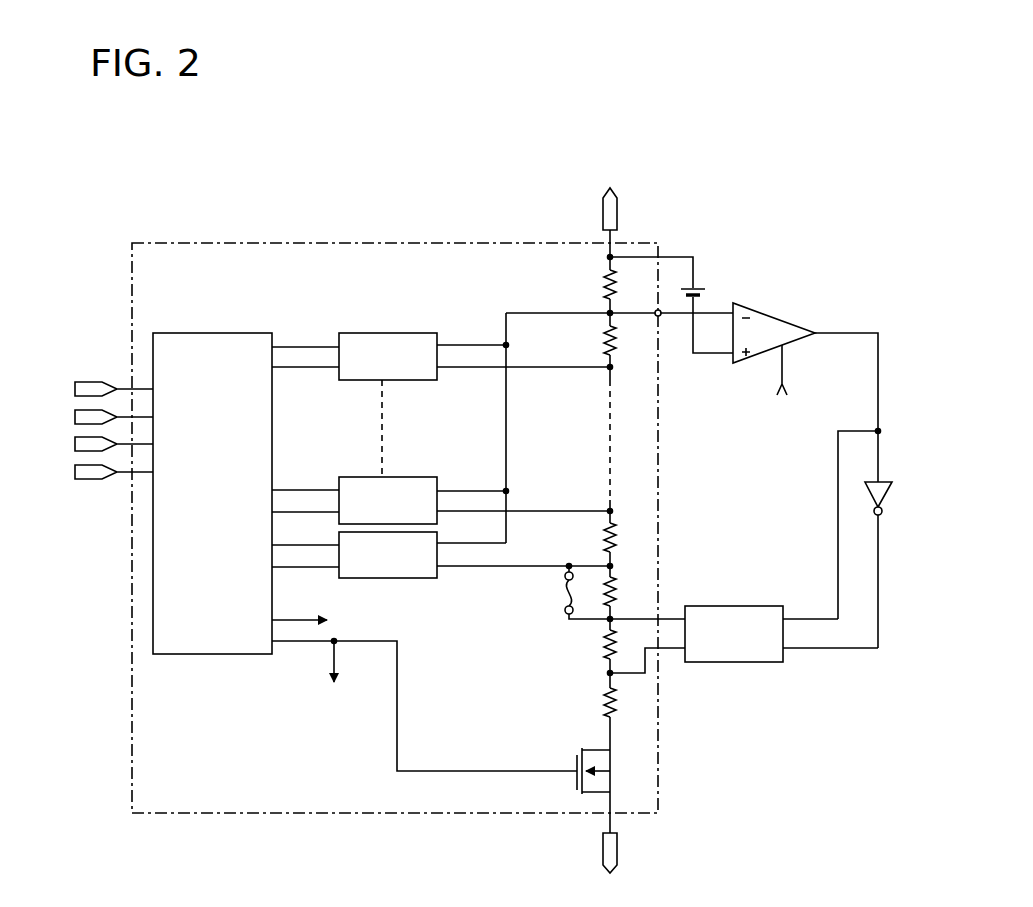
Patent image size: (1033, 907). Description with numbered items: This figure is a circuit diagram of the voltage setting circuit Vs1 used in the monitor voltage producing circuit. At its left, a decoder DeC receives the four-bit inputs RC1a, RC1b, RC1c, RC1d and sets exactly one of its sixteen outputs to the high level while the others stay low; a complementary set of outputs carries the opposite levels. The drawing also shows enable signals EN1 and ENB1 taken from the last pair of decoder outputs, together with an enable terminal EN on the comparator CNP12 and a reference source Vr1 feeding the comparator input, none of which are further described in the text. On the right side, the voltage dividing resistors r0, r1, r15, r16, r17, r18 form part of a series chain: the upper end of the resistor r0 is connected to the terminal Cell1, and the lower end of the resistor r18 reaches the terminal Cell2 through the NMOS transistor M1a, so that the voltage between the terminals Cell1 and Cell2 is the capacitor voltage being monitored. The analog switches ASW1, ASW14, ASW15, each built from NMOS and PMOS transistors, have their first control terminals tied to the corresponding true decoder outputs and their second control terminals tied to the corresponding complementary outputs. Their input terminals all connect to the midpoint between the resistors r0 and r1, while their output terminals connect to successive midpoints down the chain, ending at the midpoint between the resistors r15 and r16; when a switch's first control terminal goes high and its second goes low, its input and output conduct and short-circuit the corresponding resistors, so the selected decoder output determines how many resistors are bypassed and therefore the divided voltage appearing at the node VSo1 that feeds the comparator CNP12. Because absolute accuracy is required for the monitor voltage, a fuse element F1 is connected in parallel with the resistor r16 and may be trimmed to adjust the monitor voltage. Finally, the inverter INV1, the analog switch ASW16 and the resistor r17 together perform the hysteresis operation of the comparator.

The voltage setting circuit Vs1 is at (352, 265).
The decoder DeC is at (193, 327).
The input RC1a is at (93, 389).
The input RC1b is at (93, 417).
The input RC1c is at (93, 444).
The input RC1d is at (93, 472).
The enable signal EN1 is at (315, 621).
The inverted enable signal ENB1 is at (337, 674).
The analog switch ASW1 is at (397, 332).
The analog switch ASW14 is at (406, 477).
The analog switch ASW15 is at (417, 579).
The analog switch ASW16 is at (758, 606).
The terminal Cell1 is at (610, 199).
The terminal Cell2 is at (610, 865).
The voltage dividing resistor r0 is at (619, 284).
The voltage dividing resistor r1 is at (619, 340).
The voltage dividing resistor r15 is at (622, 537).
The voltage dividing resistor r16 is at (622, 591).
The resistor r17 is at (622, 644).
The voltage dividing resistor r18 is at (622, 702).
The reference voltage source Vr1 is at (671, 305).
The sensed voltage node VSo1 is at (671, 319).
The comparator CNP12 is at (797, 322).
The enable input EN is at (781, 378).
The inverter INV1 is at (883, 478).
The fuse element F1 is at (578, 592).
The NMOS transistor M1a is at (441, 717).